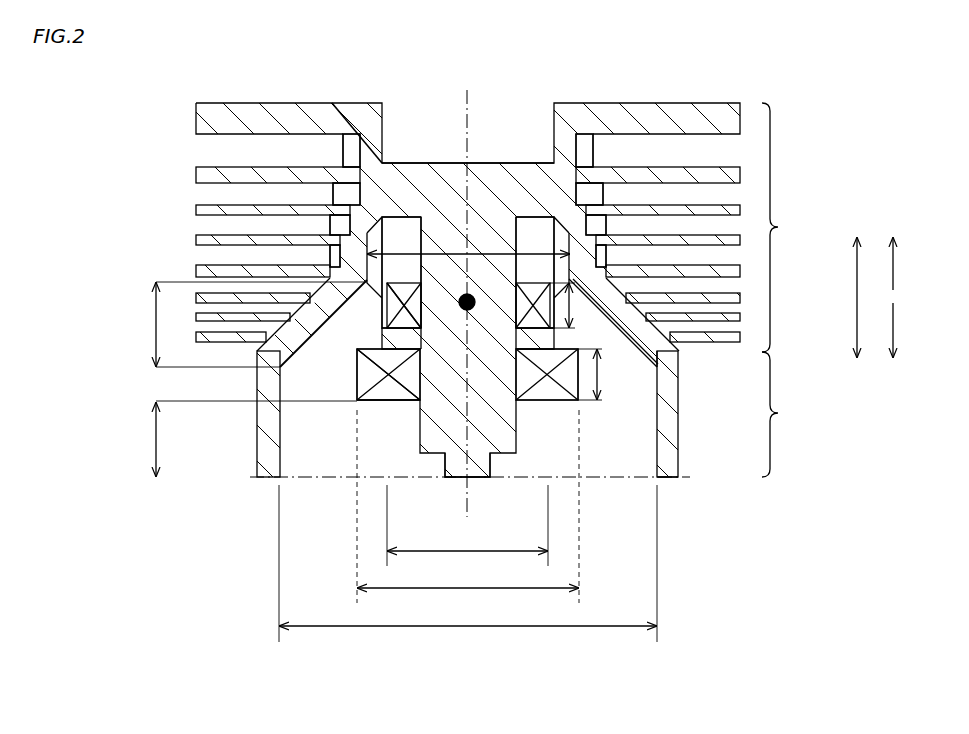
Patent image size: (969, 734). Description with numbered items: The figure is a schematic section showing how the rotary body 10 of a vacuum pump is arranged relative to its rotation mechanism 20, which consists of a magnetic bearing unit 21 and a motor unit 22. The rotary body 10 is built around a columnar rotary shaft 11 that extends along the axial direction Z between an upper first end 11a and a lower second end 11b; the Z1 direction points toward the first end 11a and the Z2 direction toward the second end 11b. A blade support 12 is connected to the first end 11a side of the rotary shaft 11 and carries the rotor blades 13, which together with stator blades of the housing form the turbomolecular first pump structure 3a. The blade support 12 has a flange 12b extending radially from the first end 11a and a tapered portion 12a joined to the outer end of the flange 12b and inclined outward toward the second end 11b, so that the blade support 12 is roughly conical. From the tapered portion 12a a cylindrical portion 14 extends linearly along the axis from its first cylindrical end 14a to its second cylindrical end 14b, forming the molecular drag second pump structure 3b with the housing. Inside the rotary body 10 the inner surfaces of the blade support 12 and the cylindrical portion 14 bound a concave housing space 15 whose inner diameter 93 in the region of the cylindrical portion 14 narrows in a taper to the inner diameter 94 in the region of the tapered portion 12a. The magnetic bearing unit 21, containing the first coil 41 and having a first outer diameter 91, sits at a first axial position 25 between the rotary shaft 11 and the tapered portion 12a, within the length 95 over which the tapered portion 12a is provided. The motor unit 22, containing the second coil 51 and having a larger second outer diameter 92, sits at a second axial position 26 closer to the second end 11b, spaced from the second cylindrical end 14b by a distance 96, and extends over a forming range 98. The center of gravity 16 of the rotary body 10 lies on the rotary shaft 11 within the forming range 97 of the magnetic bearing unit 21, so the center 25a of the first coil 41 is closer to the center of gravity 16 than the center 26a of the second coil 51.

The rotary body 10 is at (163, 87).
The rotary shaft 11 is at (527, 222).
The first end 11a is at (487, 212).
The second end 11b is at (453, 485).
The blade support 12 is at (422, 63).
The tapered portion 12a is at (330, 290).
The flange 12b is at (400, 195).
The rotor blades 13 is at (196, 122).
The cylindrical portion 14 is at (258, 433).
The first cylindrical end 14a is at (668, 367).
The second cylindrical end 14b is at (677, 482).
The housing space 15 is at (303, 463).
The center of gravity 16 is at (458, 300).
The rotation mechanism 20 is at (108, 337).
The magnetic bearing unit 21 is at (378, 332).
The motor unit 22 is at (347, 373).
The first axial position 25 is at (582, 328).
The center of the first coil 25a is at (389, 306).
The second axial position 26 is at (587, 403).
The center of the second coil 26a is at (387, 373).
The first coil 41 is at (405, 290).
The second coil 51 is at (405, 400).
The first outer diameter 91 is at (467, 527).
The second outer diameter 92 is at (468, 509).
The inner diameter 93 is at (468, 566).
The inner diameter 94 is at (468, 246).
The length 95 is at (249, 324).
The distance 96 is at (244, 439).
The forming range 97 is at (574, 305).
The forming range 98 is at (602, 374).
The first pump structure 3a is at (795, 227).
The second pump structure 3b is at (795, 414).
The axial direction Z is at (847, 297).
The Z1 direction Z1 is at (880, 265).
The Z2 direction Z2 is at (880, 330).